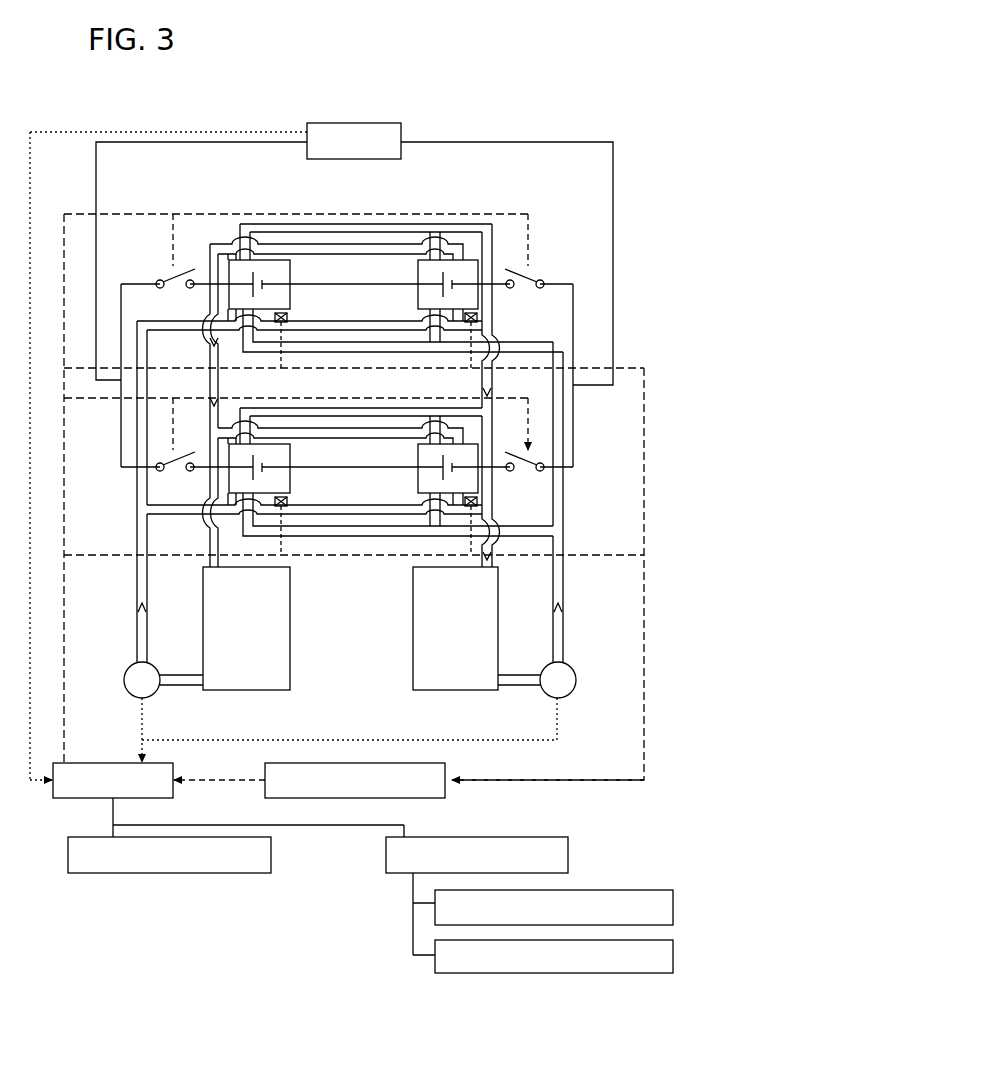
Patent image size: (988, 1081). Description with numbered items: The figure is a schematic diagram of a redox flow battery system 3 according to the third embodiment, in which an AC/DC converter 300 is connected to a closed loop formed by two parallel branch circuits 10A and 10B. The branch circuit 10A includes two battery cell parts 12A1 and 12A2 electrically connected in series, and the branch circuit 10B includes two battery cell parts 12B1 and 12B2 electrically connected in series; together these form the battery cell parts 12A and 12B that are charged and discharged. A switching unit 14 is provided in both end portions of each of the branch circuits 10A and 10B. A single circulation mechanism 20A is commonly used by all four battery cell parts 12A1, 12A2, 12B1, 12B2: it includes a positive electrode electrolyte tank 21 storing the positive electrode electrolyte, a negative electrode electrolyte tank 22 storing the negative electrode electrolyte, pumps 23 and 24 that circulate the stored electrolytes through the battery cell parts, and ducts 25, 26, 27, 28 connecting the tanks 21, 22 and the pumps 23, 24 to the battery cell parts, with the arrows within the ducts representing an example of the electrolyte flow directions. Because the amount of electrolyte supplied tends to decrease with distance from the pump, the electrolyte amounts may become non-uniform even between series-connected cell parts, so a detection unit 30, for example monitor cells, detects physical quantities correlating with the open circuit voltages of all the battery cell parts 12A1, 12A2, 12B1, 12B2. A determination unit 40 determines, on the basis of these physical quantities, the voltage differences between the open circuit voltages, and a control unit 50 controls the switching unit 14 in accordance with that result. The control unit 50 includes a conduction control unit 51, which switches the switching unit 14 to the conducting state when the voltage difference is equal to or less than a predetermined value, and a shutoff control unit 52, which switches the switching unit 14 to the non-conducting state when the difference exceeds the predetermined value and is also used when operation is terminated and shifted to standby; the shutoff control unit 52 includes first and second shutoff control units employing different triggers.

The power supply system 3 is at (623, 186).
The AC/DC converter 300 is at (401, 128).
The branch circuit 10A is at (366, 616).
The branch circuit 10B is at (384, 721).
The battery cell part 12A is at (408, 633).
The battery cell part 12B is at (408, 738).
The battery cell part 12A1 is at (290, 268).
The battery cell part 12A2 is at (418, 292).
The battery cell part 12B1 is at (290, 452).
The battery cell part 12B2 is at (418, 477).
The switching unit 14 is at (180, 292).
The detection unit 30 is at (287, 317).
The circulation mechanism 20A is at (398, 641).
The positive electrode electrolyte tank 21 is at (275, 690).
The negative electrode electrolyte tank 22 is at (433, 690).
The pump 23 is at (156, 692).
The pump 24 is at (545, 692).
The duct 25 is at (137, 597).
The duct 26 is at (565, 592).
The duct 27 is at (207, 542).
The duct 28 is at (497, 565).
The determination unit 40 is at (447, 765).
The control unit 50 is at (54, 800).
The conduction control unit 51 is at (272, 855).
The shutoff control unit 52 is at (568, 855).